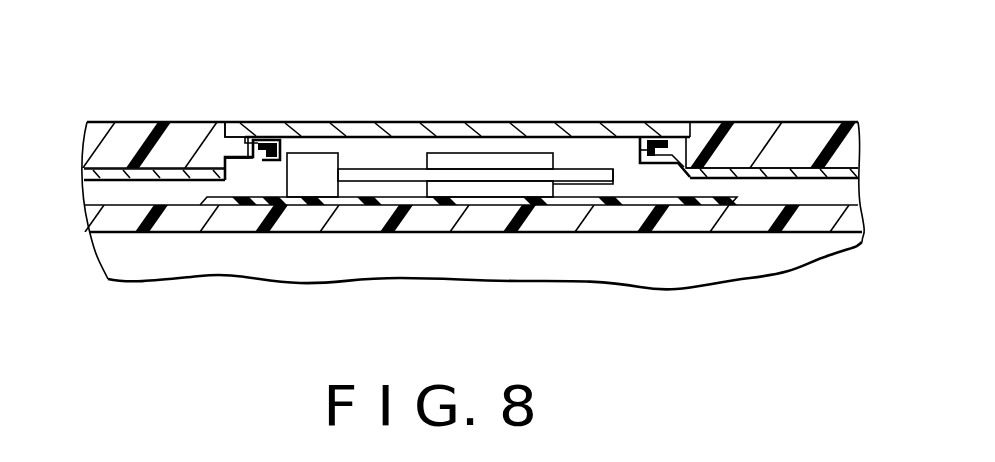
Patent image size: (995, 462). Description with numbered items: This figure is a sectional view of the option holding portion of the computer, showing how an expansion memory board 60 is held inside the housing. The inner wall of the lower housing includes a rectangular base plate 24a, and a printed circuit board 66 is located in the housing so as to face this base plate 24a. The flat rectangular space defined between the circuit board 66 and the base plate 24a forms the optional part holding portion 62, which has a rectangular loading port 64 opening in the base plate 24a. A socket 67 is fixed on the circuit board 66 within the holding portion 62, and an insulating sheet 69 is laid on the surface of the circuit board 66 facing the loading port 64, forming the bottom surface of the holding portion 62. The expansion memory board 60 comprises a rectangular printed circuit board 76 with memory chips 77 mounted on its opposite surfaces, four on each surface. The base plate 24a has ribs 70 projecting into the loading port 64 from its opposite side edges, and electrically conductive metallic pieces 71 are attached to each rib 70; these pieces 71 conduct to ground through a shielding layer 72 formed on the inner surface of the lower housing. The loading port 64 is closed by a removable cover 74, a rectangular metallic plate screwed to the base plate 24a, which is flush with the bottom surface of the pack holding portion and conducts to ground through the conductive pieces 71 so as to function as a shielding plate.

The base plate 24a is at (762, 140).
The expansion memory board 60 is at (394, 150).
The optional part holding portion 62 is at (603, 150).
The loading port 64 is at (232, 137).
The printed circuit board 66 is at (752, 226).
The socket 67 is at (314, 152).
The insulating sheet 69 is at (590, 206).
The rib 70 is at (238, 145).
The electrically conductive metallic piece 71 is at (663, 138).
The shielding layer 72 is at (113, 180).
The removable cover 74 is at (547, 136).
The printed circuit board 76 is at (382, 178).
The memory chips 77 is at (258, 140).